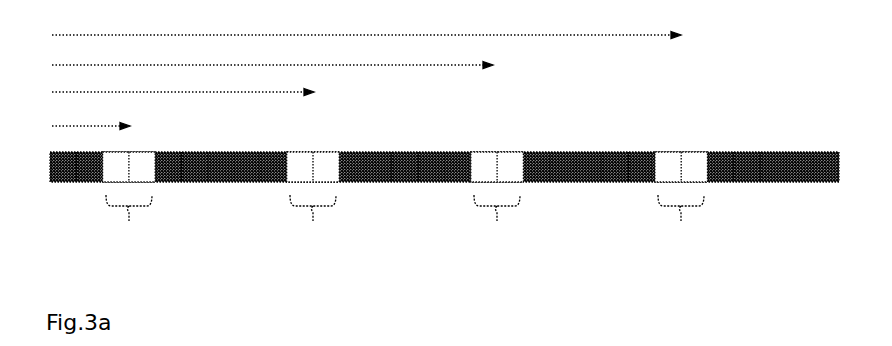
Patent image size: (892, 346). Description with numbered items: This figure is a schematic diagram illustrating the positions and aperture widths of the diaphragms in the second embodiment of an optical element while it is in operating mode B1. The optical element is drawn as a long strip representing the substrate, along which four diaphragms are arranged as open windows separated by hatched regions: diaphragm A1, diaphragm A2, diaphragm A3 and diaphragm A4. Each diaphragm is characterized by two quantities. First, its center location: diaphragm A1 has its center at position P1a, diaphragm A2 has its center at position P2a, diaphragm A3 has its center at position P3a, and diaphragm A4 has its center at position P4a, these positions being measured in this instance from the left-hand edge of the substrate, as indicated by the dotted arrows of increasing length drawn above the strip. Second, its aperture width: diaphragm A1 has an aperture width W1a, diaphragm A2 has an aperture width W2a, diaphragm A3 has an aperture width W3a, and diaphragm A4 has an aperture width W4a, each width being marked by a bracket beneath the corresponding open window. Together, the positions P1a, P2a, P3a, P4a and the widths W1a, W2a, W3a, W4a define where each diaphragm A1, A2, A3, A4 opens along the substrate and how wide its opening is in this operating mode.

The position P1a is at (91, 116).
The position P2a is at (183, 85).
The position P3a is at (272, 57).
The position P4a is at (366, 27).
The aperture width W1a is at (129, 230).
The aperture width W2a is at (313, 230).
The aperture width W3a is at (497, 230).
The aperture width W4a is at (681, 230).
The diaphragm A1 is at (129, 228).
The diaphragm A2 is at (313, 229).
The diaphragm A3 is at (497, 229).
The diaphragm A4 is at (681, 229).